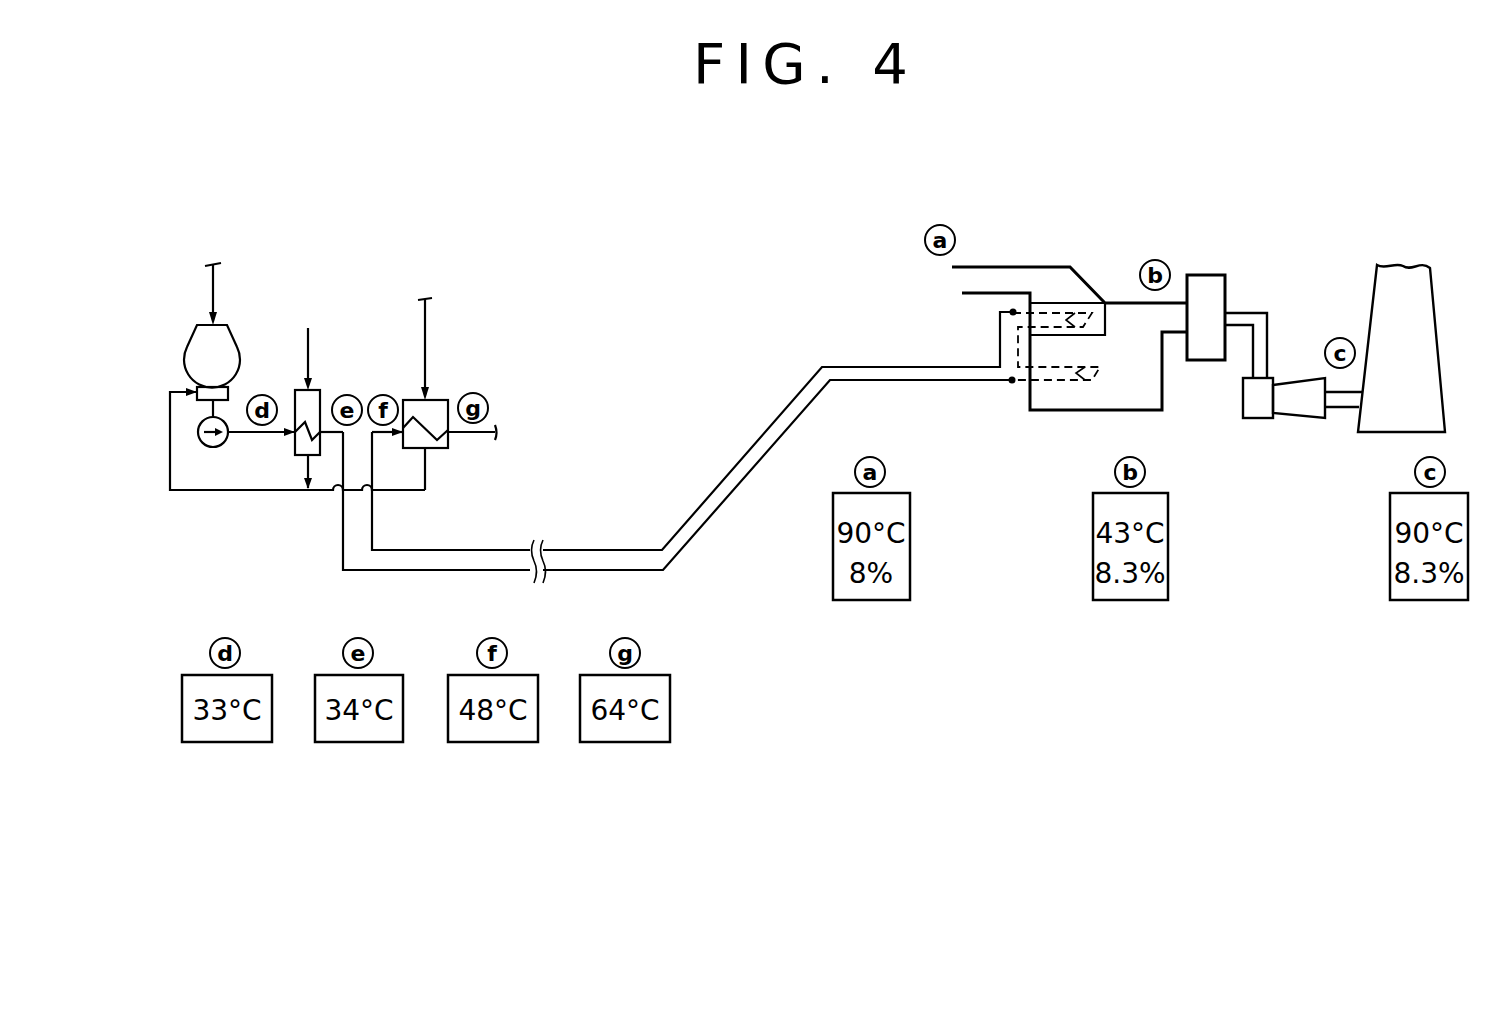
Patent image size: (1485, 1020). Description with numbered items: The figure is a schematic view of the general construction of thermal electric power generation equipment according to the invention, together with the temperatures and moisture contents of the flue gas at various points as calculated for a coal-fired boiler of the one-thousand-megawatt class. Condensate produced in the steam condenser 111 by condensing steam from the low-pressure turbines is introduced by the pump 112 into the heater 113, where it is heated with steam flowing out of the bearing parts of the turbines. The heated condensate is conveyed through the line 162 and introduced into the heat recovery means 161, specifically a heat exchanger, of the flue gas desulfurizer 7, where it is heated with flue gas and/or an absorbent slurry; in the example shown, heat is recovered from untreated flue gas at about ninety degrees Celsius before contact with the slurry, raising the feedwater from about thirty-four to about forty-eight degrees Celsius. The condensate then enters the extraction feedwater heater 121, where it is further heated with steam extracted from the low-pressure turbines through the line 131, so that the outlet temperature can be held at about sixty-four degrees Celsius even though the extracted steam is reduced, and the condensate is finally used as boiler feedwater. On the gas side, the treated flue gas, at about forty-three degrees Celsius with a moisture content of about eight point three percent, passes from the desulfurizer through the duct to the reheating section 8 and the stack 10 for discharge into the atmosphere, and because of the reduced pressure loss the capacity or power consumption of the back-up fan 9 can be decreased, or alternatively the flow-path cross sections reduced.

The flue gas desulfurizer 7 is at (1087, 283).
The reheating section 8 is at (1203, 275).
The back-up fan 9 is at (1303, 377).
The stack 10 is at (1372, 295).
The steam condenser 111 is at (238, 338).
The pump 112 is at (213, 448).
The heater 113 is at (322, 393).
The extraction feedwater heater 121 is at (450, 398).
The line 131 is at (425, 326).
The heat recovery means 161 is at (1053, 398).
The line 162 is at (742, 440).